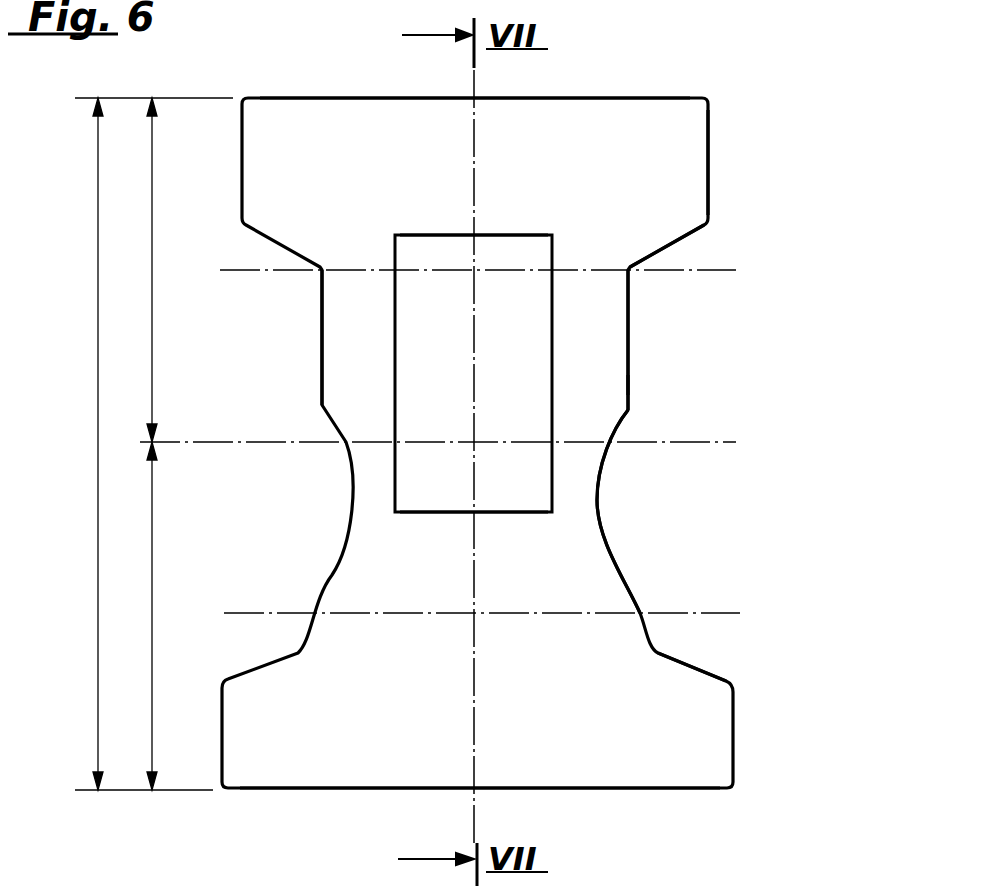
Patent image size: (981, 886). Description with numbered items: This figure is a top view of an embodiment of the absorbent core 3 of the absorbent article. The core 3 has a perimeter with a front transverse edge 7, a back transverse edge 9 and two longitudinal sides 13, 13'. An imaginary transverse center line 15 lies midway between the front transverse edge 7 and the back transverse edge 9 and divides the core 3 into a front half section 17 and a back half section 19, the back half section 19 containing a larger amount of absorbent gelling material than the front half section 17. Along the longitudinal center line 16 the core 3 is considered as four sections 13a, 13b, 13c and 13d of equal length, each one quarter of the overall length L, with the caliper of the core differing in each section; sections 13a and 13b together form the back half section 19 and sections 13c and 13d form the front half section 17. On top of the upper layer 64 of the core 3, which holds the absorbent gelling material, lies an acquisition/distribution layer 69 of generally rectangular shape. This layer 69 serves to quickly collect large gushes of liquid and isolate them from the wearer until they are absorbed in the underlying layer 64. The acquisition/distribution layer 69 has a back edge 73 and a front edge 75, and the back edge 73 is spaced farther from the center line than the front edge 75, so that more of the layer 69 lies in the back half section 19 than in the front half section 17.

The absorbent core 3 is at (716, 84).
The front transverse edge 7 is at (624, 792).
The back transverse edge 9 is at (596, 97).
The longitudinal side 13 is at (278, 337).
The section of the core 13a is at (680, 202).
The section of the core 13b is at (608, 347).
The section of the core 13c is at (572, 531).
The section of the core 13d is at (700, 708).
The longitudinal side 13' is at (668, 386).
The transverse center line 15 is at (702, 446).
The longitudinal center line 16 is at (474, 165).
The front half section 17 is at (154, 643).
The back half section 19 is at (154, 340).
The upper layer 64 is at (680, 152).
The acquisition/distribution layer 69 is at (528, 306).
The back edge 73 is at (507, 234).
The front edge 75 is at (507, 513).
The length of the core L is at (97, 419).